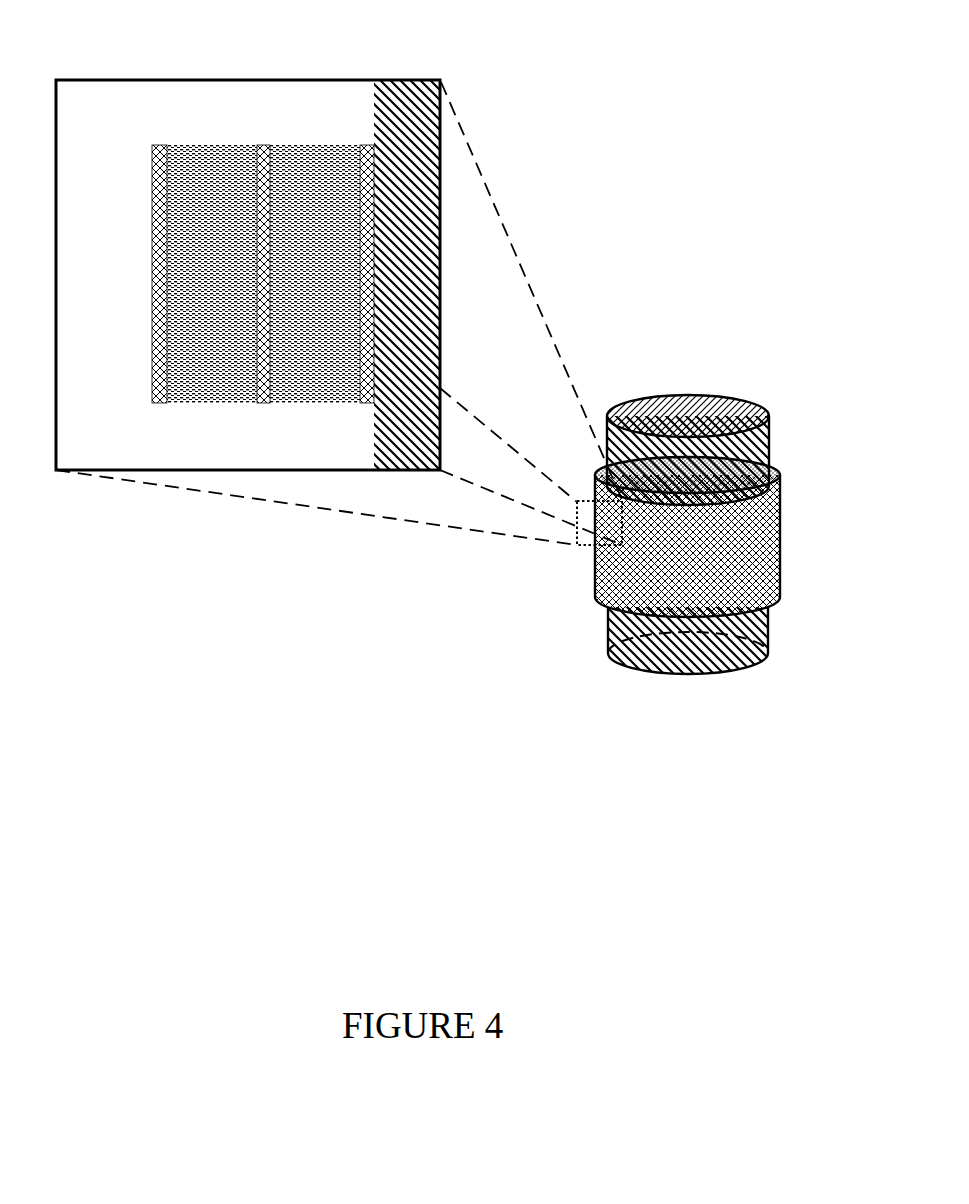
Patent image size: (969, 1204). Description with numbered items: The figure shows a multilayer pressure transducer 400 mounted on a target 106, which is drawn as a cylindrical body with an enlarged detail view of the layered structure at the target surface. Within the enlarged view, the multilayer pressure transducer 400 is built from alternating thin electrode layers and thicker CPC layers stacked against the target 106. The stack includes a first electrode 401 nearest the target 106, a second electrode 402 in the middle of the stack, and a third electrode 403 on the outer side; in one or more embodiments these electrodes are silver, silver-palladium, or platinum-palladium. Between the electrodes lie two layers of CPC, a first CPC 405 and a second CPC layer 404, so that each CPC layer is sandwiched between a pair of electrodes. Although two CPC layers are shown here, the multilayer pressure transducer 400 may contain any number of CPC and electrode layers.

The target 106 is at (410, 232).
The multilayer pressure transducer 400 is at (339, 446).
The first electrode 401 is at (366, 143).
The second electrode 402 is at (263, 143).
The third electrode 403 is at (159, 143).
The first material layer 404 is at (317, 376).
The first CPC 405 is at (216, 376).